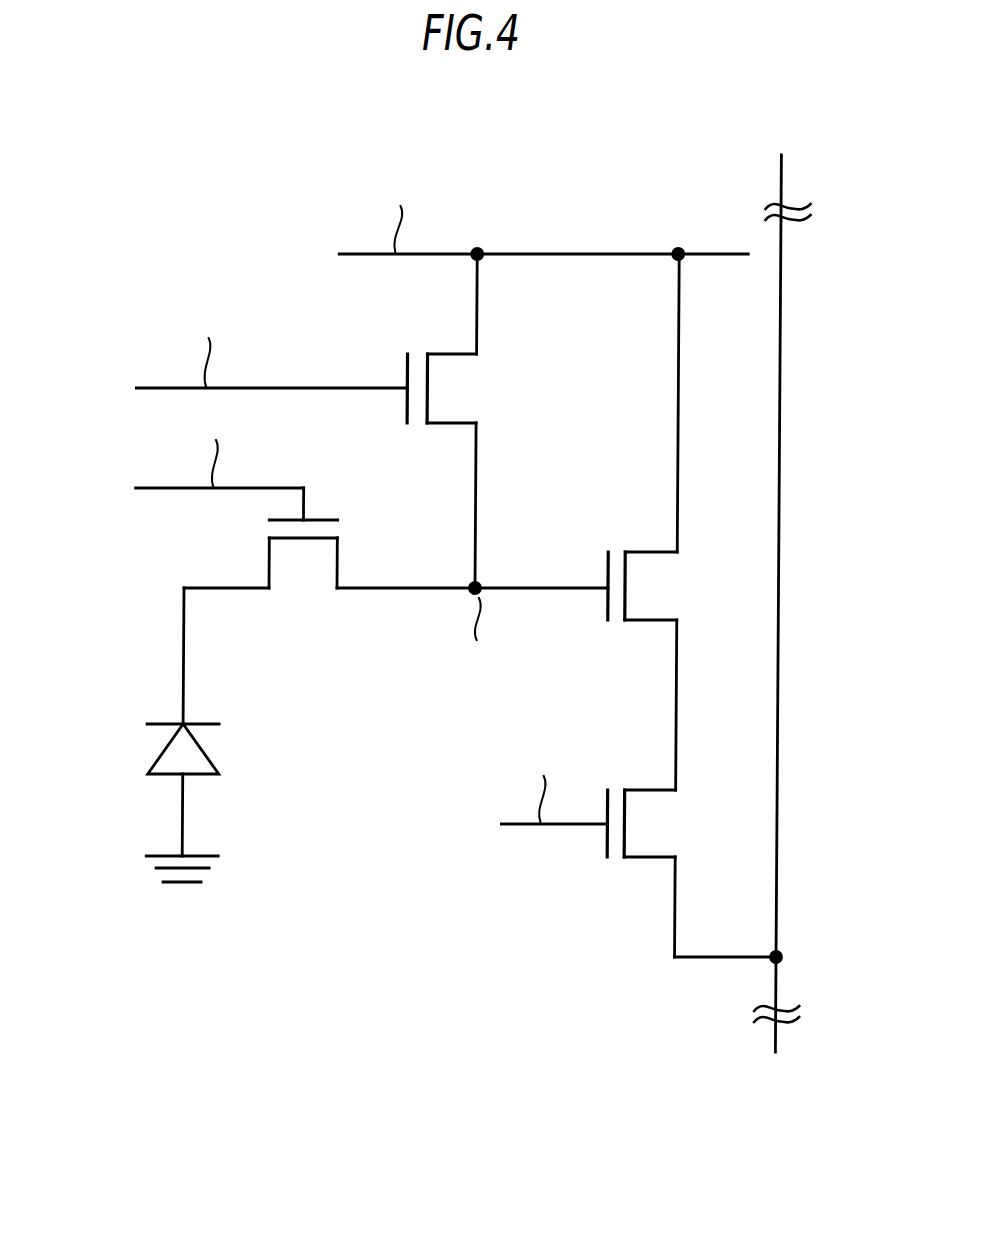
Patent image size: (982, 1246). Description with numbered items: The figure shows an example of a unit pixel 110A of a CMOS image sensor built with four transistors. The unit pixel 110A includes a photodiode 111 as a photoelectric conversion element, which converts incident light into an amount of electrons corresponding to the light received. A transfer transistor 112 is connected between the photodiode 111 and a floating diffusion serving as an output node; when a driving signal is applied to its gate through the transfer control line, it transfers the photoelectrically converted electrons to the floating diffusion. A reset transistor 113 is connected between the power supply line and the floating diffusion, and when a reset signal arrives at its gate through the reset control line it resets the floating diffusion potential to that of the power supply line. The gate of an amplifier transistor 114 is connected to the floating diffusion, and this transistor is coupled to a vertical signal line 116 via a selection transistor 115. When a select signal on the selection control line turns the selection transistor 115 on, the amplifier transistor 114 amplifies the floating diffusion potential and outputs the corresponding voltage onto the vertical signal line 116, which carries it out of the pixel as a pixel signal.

The unit pixel 110A is at (272, 128).
The photodiode 111 is at (164, 746).
The transfer transistor 112 is at (308, 574).
The reset transistor 113 is at (458, 385).
The amplifier transistor 114 is at (640, 595).
The selection transistor 115 is at (642, 830).
The vertical signal line 116 is at (779, 712).